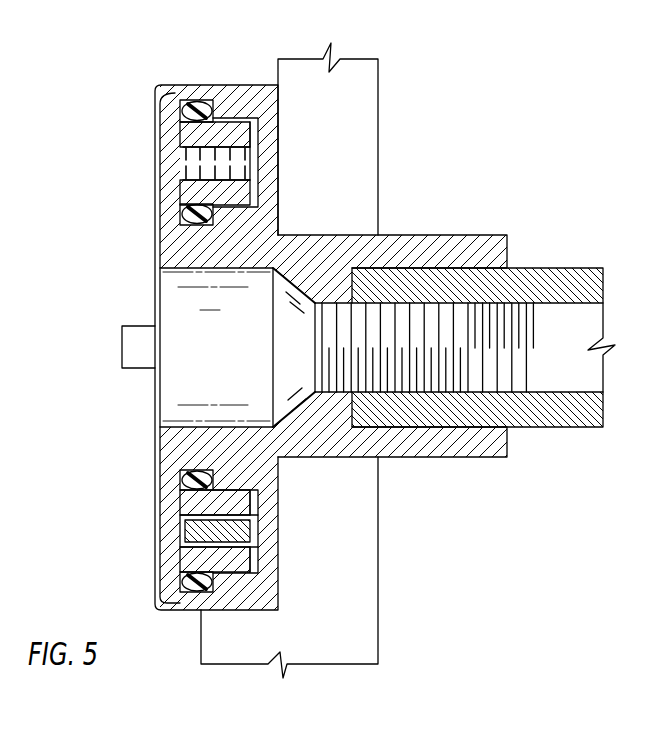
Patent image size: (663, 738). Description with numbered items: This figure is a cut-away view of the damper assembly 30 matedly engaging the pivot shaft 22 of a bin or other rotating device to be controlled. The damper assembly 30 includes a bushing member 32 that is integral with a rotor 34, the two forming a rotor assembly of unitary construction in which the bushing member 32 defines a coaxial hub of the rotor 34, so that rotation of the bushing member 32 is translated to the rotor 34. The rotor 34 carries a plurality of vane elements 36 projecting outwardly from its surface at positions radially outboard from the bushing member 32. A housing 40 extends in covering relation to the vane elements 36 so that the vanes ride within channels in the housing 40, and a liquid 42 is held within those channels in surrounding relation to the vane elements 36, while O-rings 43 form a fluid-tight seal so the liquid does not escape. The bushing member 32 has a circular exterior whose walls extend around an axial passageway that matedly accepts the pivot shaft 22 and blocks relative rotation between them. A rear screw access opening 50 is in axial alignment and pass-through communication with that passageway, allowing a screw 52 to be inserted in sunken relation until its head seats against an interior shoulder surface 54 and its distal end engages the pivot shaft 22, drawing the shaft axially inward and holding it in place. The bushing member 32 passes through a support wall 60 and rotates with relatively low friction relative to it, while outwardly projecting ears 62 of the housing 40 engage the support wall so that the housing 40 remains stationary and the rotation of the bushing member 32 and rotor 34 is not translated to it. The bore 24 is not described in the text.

The pivot shaft 22 is at (552, 430).
The shaft bore 24 is at (565, 312).
The damper assembly 30 is at (202, 78).
The bushing member 32 is at (477, 235).
The rotor 34 is at (163, 519).
The vane elements 36 is at (255, 133).
The housing 40 is at (362, 640).
The liquid 42 is at (250, 160).
The O-rings 43 is at (196, 214).
The screw access opening 50 is at (157, 388).
The screw 52 is at (333, 327).
The interior shoulder surface 54 is at (293, 398).
The support wall 60 is at (367, 59).
The ears 62 is at (120, 343).